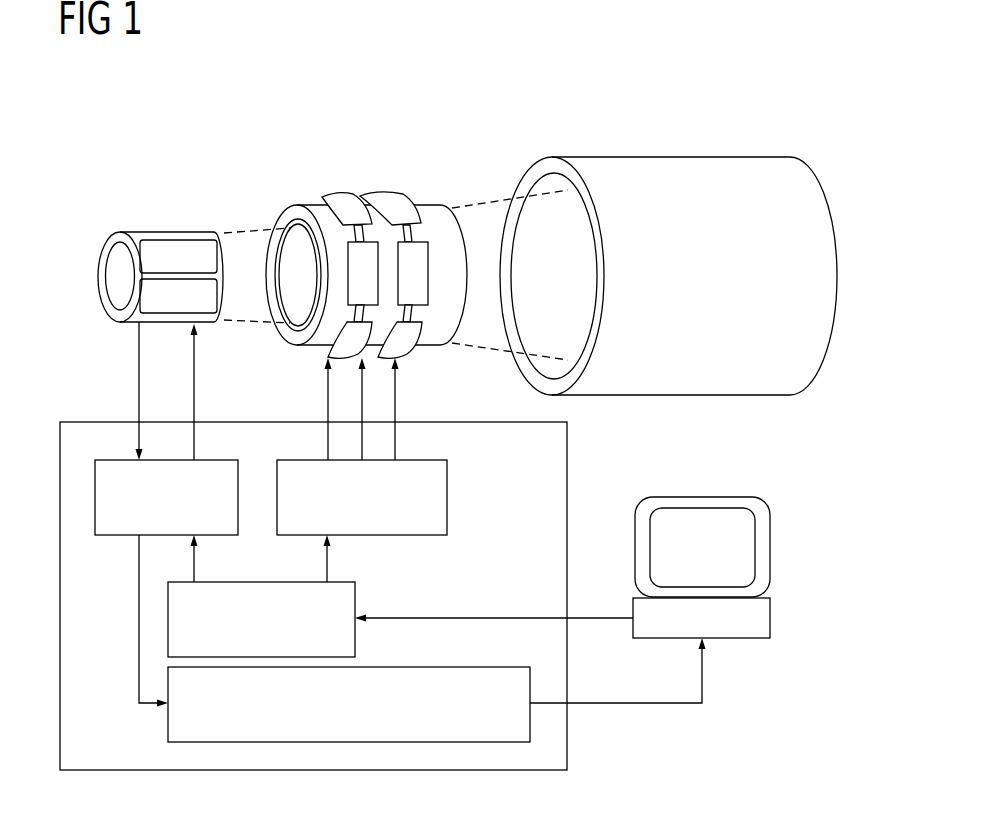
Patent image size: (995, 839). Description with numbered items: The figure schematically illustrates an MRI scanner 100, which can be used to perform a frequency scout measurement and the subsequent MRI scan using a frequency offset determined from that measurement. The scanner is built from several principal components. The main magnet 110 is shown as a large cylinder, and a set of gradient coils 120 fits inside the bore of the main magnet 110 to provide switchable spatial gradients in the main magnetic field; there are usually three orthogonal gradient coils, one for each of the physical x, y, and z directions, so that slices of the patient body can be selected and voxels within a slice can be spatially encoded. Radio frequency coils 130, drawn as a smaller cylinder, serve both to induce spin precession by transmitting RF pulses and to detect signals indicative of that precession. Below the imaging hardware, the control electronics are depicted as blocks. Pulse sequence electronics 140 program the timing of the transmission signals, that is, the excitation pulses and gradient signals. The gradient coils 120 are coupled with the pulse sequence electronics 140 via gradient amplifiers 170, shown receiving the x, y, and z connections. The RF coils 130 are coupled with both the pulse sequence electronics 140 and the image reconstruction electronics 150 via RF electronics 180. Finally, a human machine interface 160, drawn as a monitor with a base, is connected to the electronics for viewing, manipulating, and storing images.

The MRI scanner 100 is at (538, 105).
The main magnet 110 is at (673, 157).
The gradient coils 120 is at (290, 205).
The radio frequency coils 130 is at (162, 232).
The pulse sequence electronics 140 is at (355, 600).
The image reconstruction electronics 150 is at (168, 722).
The human machine interface 160 is at (702, 497).
The gradient amplifiers 170 is at (447, 498).
The RF electronics 180 is at (117, 535).